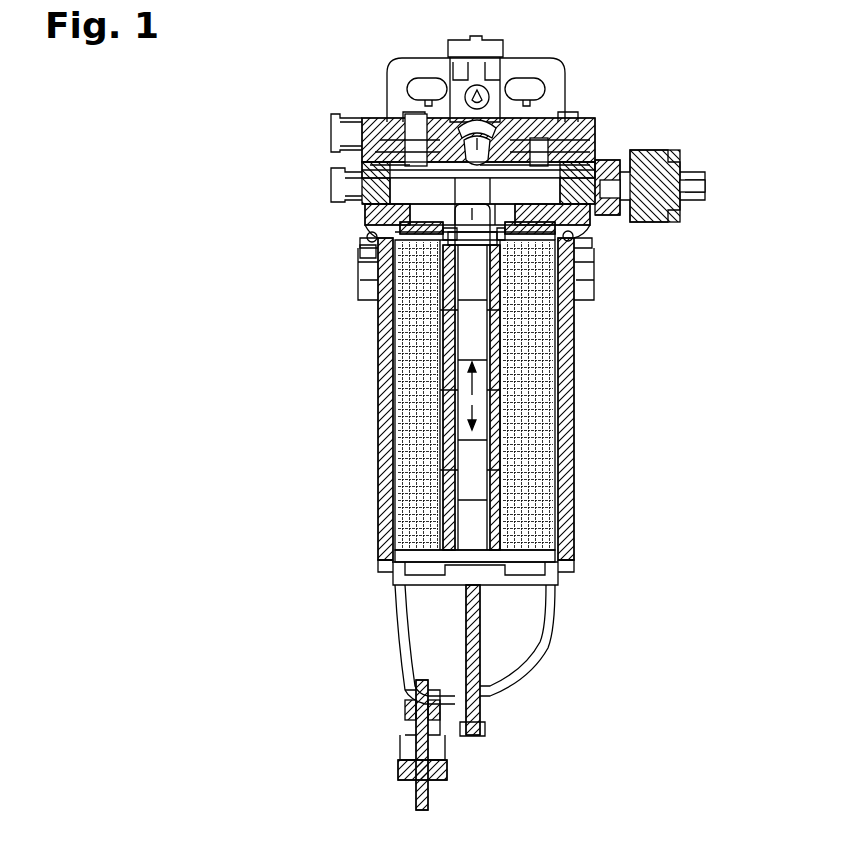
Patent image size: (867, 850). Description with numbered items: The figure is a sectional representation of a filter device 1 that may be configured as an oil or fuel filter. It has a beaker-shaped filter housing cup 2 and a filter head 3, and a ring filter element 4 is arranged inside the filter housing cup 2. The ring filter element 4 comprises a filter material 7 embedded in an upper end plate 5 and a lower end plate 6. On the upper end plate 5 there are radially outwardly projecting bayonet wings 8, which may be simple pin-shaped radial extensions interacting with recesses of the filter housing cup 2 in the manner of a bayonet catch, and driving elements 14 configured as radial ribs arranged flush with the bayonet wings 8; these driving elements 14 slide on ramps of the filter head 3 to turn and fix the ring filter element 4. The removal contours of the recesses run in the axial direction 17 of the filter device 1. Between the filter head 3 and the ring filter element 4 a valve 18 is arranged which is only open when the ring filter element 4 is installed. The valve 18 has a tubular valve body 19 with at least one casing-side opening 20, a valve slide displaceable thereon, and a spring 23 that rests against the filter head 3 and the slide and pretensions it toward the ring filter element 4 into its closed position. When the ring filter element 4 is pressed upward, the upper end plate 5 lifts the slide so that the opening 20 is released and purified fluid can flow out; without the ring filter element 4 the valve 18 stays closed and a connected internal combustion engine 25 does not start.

The filter device 1 is at (712, 90).
The filter housing cup 2 is at (385, 523).
The filter head 3 is at (598, 140).
The ring filter element 4 is at (546, 396).
The upper end plate 5 is at (565, 233).
The lower end plate 6 is at (533, 553).
The filter material 7 is at (535, 465).
The bayonet wing 8 is at (393, 232).
The driving element 14 is at (387, 221).
The axial direction 17 is at (445, 398).
The valve 18 is at (472, 240).
The valve body 19 is at (443, 238).
The opening 20 is at (453, 246).
The spring 23 is at (455, 222).
The internal combustion engine 25 is at (298, 105).